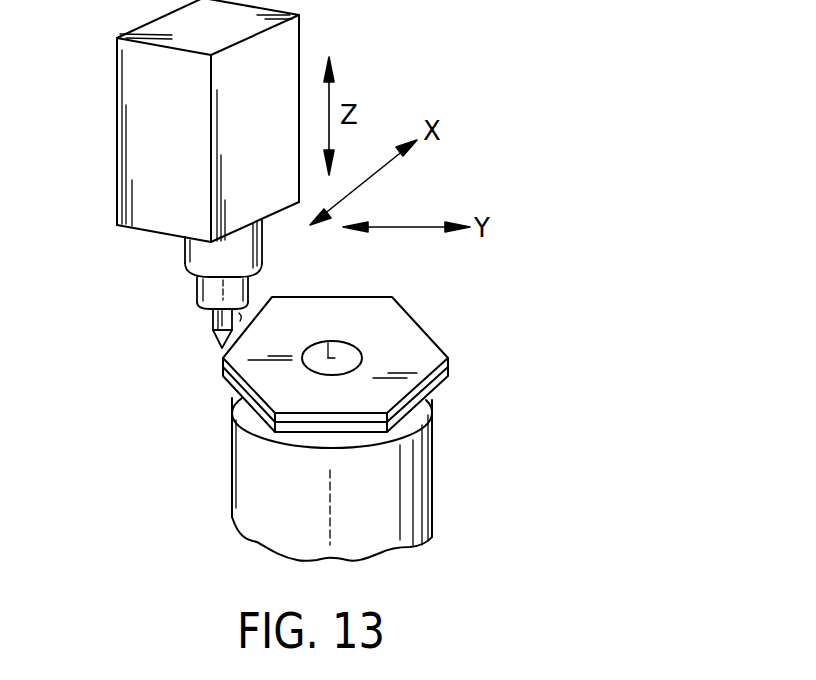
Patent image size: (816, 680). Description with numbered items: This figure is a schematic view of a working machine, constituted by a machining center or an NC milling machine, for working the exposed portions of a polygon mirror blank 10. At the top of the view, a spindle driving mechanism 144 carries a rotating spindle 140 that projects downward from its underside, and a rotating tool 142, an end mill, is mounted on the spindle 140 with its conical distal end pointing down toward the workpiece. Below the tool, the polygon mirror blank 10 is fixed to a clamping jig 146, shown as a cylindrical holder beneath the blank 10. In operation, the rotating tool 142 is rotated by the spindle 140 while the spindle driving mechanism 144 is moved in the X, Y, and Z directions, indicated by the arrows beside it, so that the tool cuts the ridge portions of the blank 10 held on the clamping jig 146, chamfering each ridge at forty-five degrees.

The polygon mirror blank 10 is at (397, 343).
The rotating spindle 140 is at (193, 262).
The rotating tool 142 is at (203, 320).
The spindle driving mechanism 144 is at (287, 52).
The clamping jig 146 is at (253, 481).